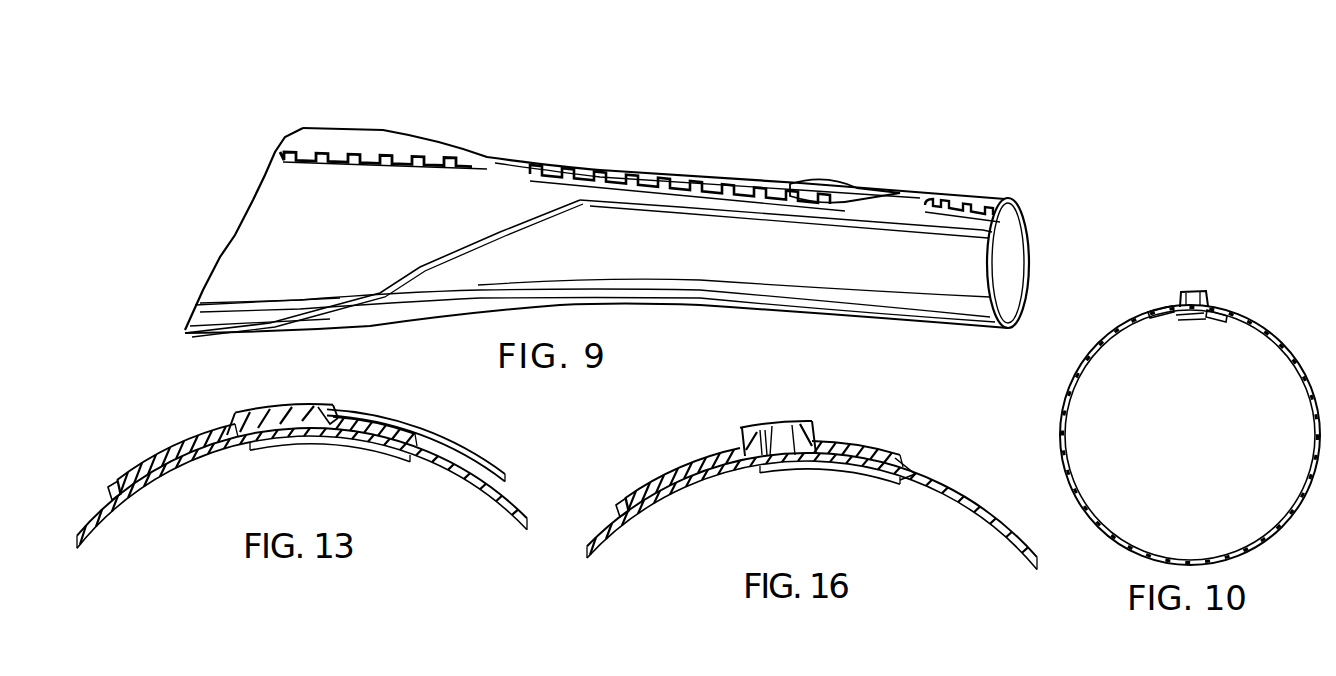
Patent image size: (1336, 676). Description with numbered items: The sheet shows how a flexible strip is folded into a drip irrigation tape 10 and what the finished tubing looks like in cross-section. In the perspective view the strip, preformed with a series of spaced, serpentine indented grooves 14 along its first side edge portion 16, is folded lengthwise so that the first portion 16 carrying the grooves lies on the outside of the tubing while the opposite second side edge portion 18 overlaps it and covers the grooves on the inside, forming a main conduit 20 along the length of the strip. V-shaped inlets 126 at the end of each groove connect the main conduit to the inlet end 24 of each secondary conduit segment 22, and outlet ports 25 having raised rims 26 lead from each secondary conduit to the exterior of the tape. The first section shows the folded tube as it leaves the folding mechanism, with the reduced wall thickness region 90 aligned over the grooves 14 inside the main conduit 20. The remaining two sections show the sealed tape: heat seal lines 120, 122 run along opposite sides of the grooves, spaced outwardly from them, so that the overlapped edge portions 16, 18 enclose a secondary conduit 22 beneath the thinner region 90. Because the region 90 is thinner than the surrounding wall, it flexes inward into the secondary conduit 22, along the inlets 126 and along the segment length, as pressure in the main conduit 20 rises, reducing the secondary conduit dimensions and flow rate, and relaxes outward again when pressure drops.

In FIG. 9, the drip irrigation tape 10 is at (962, 183).
In FIG. 13, the drip irrigation tape 10 is at (517, 476).
In FIG. 16, the drip irrigation tape 10 is at (985, 494).
In FIG. 10, the drip irrigation tape 10 is at (1292, 326).
In FIG. 9, the indented grooves 14 is at (288, 153).
In FIG. 10, the indented grooves 14 is at (1180, 318).
In FIG. 9, the first side edge portion 16 is at (378, 130).
In FIG. 13, the first side edge portion 16 is at (118, 482).
In FIG. 16, the first side edge portion 16 is at (616, 507).
In FIG. 10, the first side edge portion 16 is at (1150, 310).
In FIG. 9, the second side edge portion 18 is at (205, 333).
In FIG. 13, the second side edge portion 18 is at (416, 462).
In FIG. 16, the second side edge portion 18 is at (905, 490).
In FIG. 10, the second side edge portion 18 is at (1222, 322).
In FIG. 9, the main conduit 20 is at (1017, 247).
In FIG. 10, the main conduit 20 is at (1209, 433).
In FIG. 13, the secondary conduit segments 22 is at (272, 420).
In FIG. 13, the inlet end 24 is at (318, 410).
In FIG. 16, the outlet ports 25 is at (781, 430).
In FIG. 9, the raised rims 26 is at (930, 200).
In FIG. 16, the raised rims 26 is at (745, 432).
In FIG. 10, the raised rims 26 is at (1198, 292).
In FIG. 9, the reduced wall thickness region 90 is at (222, 306).
In FIG. 13, the reduced wall thickness region 90 is at (281, 452).
In FIG. 16, the reduced wall thickness region 90 is at (775, 462).
In FIG. 10, the reduced wall thickness region 90 is at (1192, 320).
In FIG. 16, the heat seal line 120 is at (872, 460).
In FIG. 13, the heat seal line 122 is at (185, 447).
In FIG. 16, the heat seal line 122 is at (688, 470).
In FIG. 9, the inlets 126 is at (878, 188).
In FIG. 13, the inlets 126 is at (431, 434).